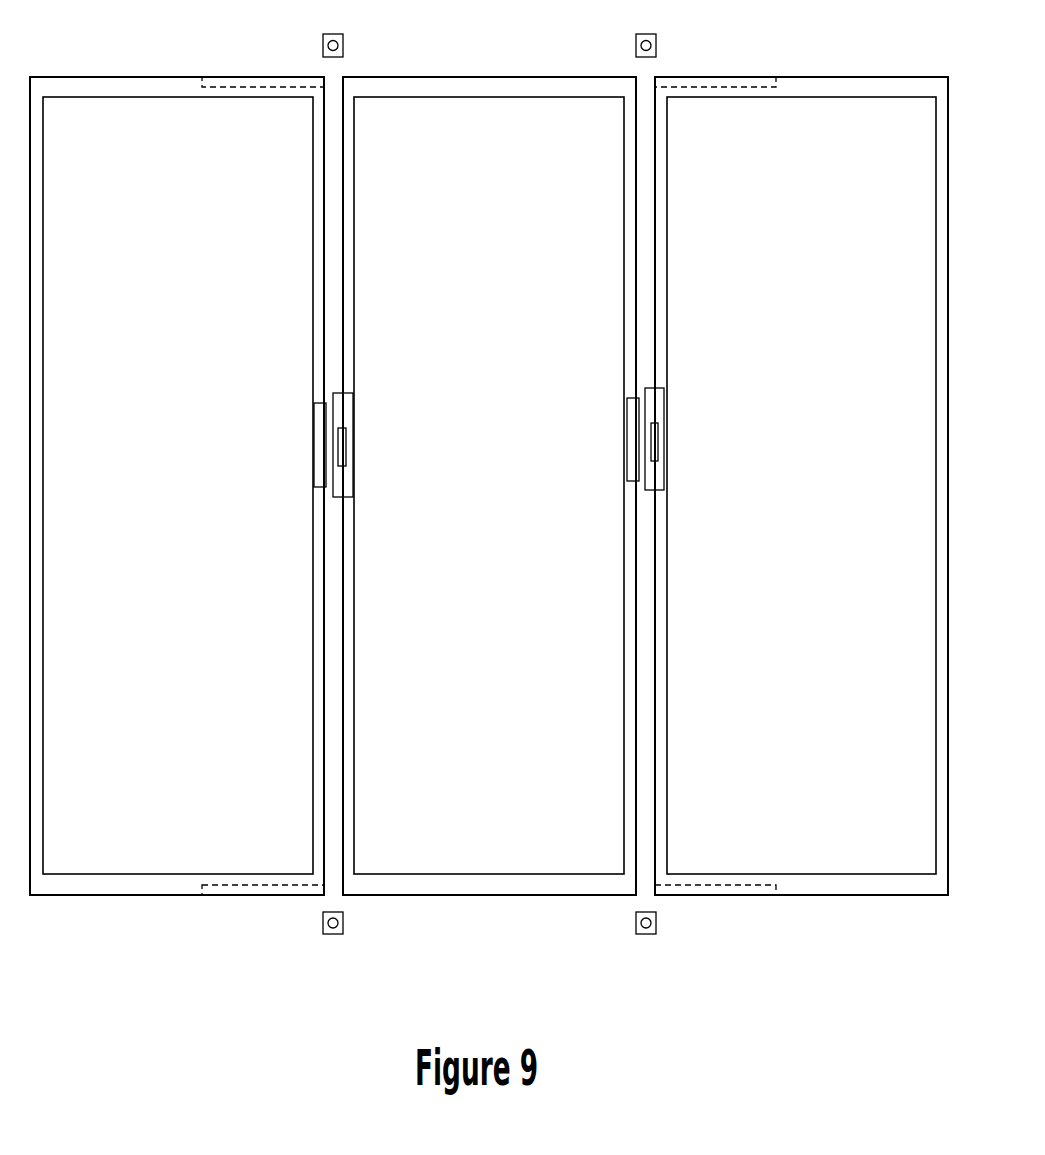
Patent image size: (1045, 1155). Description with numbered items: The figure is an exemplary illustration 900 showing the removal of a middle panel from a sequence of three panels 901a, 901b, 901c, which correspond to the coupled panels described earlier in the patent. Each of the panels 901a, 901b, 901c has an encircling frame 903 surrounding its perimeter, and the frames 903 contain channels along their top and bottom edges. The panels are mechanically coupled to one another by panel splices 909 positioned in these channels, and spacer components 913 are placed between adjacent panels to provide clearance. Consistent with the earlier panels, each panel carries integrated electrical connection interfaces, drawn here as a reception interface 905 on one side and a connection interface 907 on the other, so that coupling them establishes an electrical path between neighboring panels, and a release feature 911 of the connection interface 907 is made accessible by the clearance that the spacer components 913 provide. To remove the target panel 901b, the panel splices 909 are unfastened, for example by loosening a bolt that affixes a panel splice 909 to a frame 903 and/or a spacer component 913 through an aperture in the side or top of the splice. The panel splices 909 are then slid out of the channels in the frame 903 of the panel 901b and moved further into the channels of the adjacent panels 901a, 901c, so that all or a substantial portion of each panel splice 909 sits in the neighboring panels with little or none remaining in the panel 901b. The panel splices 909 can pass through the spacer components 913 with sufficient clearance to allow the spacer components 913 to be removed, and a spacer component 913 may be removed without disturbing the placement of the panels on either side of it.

The illustration 900 is at (476, 981).
The panel 901a is at (195, 530).
The panel 901b is at (507, 529).
The panel 901c is at (825, 515).
The frame 903 is at (122, 74).
The first connector 905 is at (316, 449).
The second connector housing 907 is at (350, 488).
The panel splice 909 is at (239, 74).
The connector contact 911 is at (342, 426).
The spacer component 913 is at (345, 45).